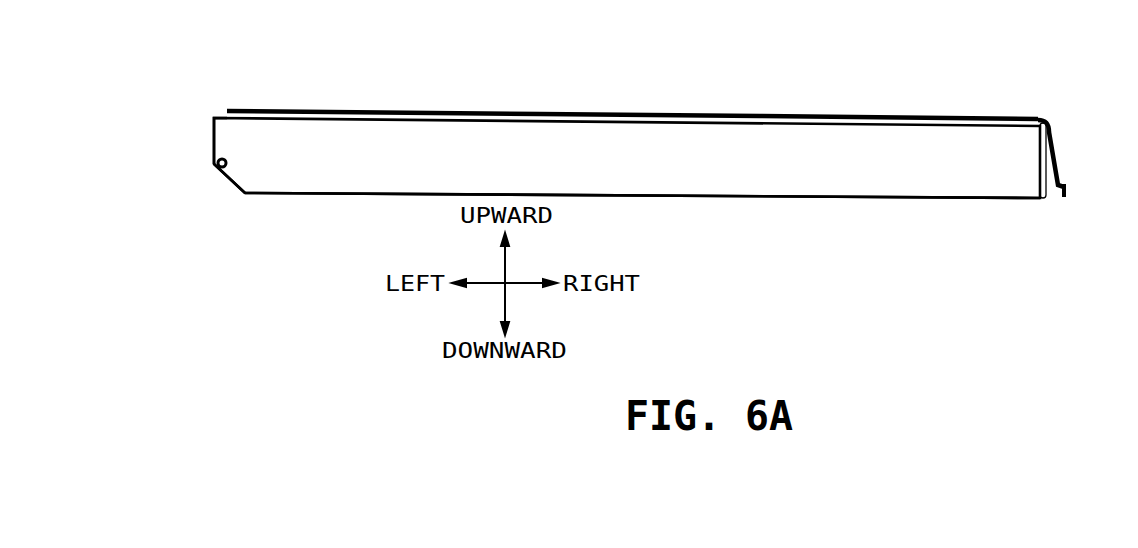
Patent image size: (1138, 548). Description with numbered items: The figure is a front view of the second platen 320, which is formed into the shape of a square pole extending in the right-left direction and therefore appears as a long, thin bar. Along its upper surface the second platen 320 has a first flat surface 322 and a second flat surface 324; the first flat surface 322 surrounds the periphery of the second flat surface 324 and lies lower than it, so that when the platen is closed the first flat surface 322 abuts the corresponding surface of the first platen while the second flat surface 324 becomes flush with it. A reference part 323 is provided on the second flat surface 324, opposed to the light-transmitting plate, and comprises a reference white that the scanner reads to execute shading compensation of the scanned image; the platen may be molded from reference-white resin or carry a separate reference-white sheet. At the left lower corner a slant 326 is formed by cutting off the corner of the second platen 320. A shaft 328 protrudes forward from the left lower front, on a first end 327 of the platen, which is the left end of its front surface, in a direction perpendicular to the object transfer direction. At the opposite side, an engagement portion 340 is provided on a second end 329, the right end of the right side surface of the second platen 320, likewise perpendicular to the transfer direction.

The second platen 320 is at (995, 133).
The first flat surface 322 is at (703, 113).
The reference part 323 is at (540, 112).
The second flat surface 324 is at (848, 113).
The slant 326 is at (240, 178).
The first end 327 is at (225, 142).
The shaft 328 is at (215, 163).
The second end 329 is at (1013, 173).
The engagement portion 340 is at (1068, 190).